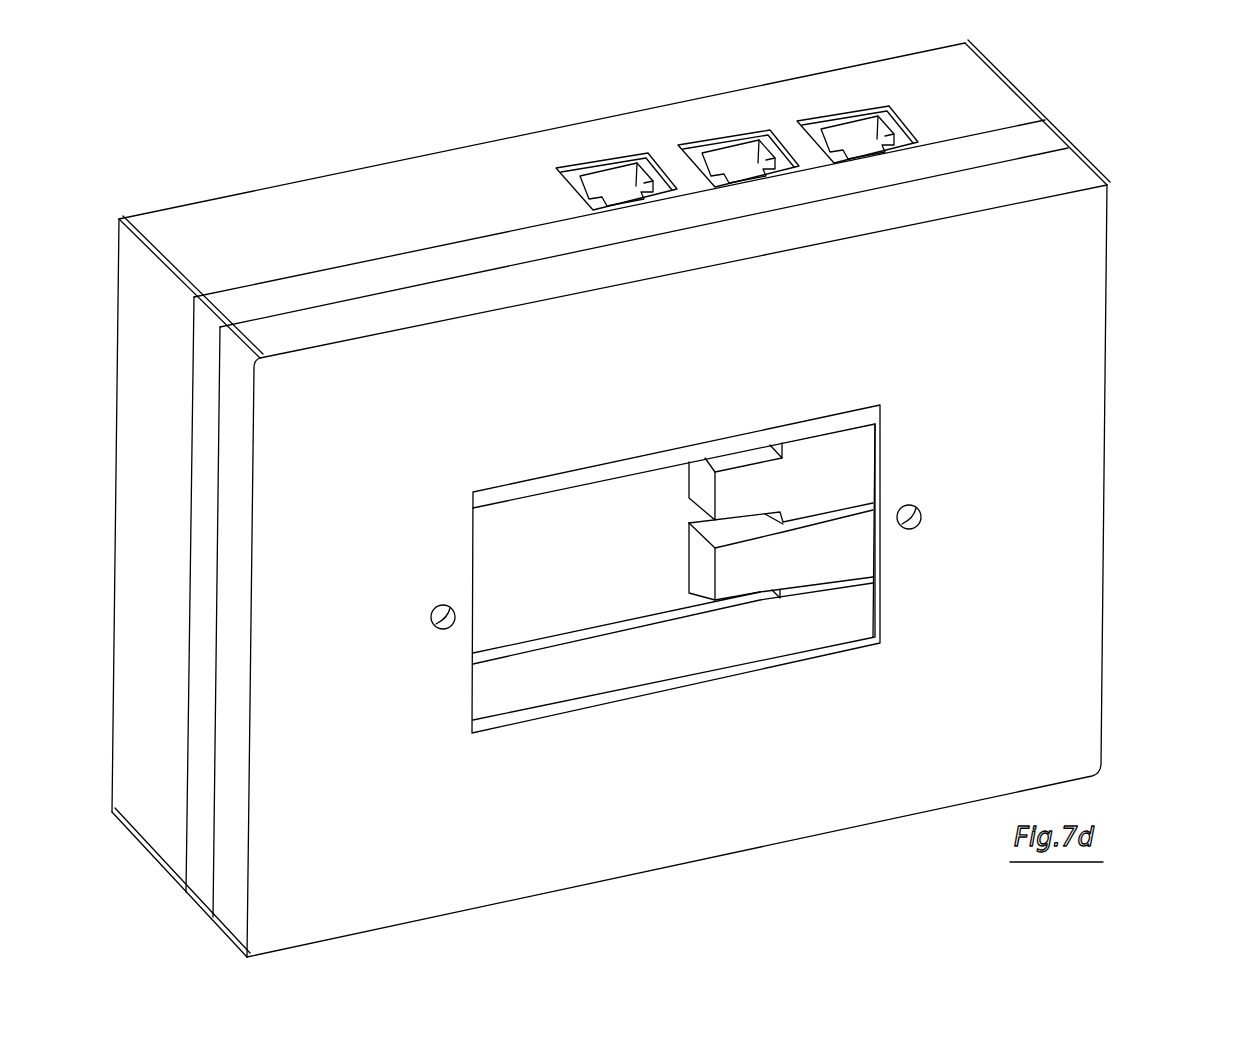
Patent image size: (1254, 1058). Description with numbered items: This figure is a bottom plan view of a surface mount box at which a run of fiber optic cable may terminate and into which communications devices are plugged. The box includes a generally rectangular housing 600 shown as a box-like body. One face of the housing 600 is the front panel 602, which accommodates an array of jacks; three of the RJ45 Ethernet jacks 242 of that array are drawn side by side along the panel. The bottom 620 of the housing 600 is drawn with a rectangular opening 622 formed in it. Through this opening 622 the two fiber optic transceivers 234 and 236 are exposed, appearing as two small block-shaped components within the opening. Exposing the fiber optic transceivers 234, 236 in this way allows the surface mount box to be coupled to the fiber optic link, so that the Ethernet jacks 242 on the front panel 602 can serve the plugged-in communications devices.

The housing 600 is at (1093, 245).
The front panel 602 is at (415, 220).
The RJ45 10/100 BaseT Ethernet jacks 242 is at (629, 185).
The bottom 620 is at (862, 792).
The opening 622 is at (582, 606).
The fiber optic transceiver 234 is at (737, 487).
The fiber optic transceiver 236 is at (740, 577).